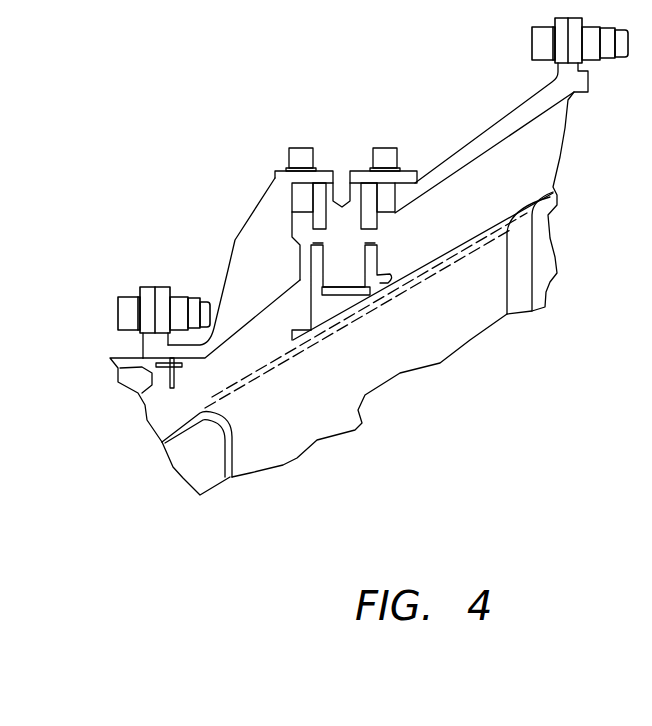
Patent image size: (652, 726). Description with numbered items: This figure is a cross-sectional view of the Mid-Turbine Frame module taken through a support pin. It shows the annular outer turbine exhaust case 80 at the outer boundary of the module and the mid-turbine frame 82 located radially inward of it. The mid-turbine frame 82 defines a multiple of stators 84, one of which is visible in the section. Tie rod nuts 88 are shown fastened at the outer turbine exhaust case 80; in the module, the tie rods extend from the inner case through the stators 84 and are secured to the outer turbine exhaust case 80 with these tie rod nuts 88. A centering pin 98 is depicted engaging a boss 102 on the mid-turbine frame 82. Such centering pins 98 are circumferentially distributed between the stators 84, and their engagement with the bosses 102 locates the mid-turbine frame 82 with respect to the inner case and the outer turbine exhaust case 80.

The annular outer turbine exhaust case 80 is at (470, 145).
The mid-turbine frame 82 is at (535, 243).
The stator 84 is at (480, 283).
The tie rod nut 88 is at (411, 131).
The centering pin 98 is at (340, 250).
The boss 102 is at (267, 220).